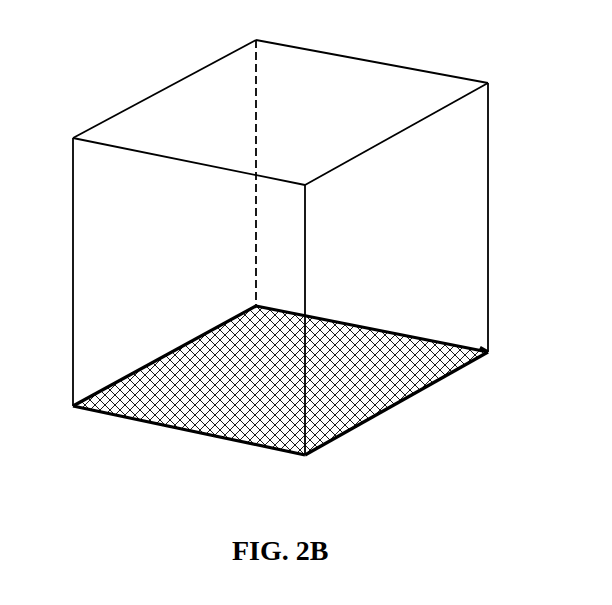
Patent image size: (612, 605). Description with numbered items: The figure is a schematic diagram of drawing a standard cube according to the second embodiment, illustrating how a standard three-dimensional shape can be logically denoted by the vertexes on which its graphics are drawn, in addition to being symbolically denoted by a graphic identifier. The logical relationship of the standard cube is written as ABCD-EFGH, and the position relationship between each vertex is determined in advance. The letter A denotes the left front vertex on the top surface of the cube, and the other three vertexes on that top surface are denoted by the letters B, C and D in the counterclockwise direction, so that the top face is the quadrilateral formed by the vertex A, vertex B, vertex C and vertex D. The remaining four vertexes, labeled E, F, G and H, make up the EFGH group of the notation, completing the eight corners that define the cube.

The left front vertex A is at (172, 223).
The top surface vertex B is at (396, 269).
The top surface vertex C is at (392, 196).
The top surface vertex D is at (257, 153).
The bottom surface vertex E is at (172, 380).
The bottom surface vertex F is at (396, 425).
The bottom surface vertex G is at (504, 354).
The bottom surface vertex H is at (280, 368).